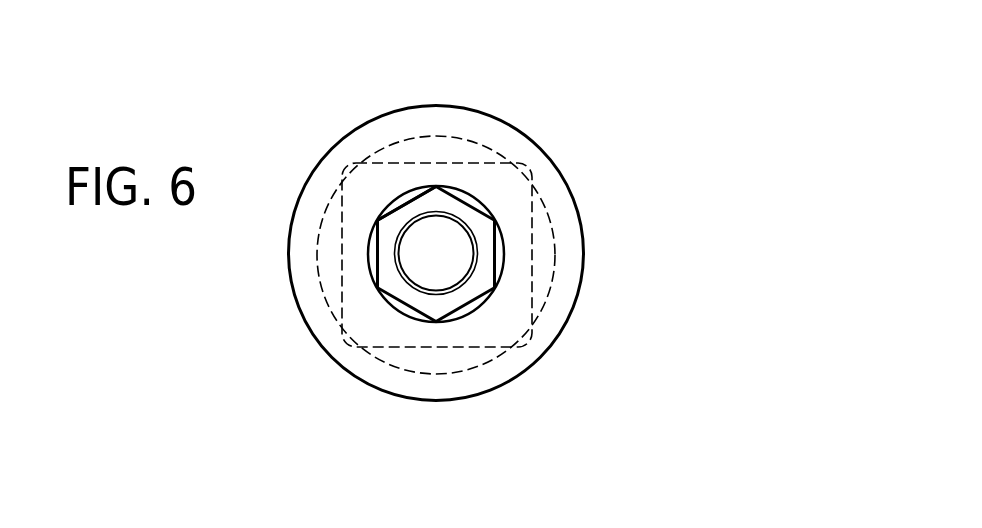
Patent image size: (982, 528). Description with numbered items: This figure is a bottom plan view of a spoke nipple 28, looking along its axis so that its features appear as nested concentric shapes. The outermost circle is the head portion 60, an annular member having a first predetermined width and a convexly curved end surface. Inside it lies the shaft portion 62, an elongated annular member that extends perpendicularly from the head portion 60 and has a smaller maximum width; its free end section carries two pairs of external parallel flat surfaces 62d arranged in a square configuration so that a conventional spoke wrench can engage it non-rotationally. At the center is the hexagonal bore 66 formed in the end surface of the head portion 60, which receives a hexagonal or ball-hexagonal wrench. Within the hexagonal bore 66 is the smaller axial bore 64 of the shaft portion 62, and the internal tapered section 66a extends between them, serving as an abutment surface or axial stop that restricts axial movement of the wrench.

The spoke nipple 28 is at (465, 226).
The head portion 60 is at (592, 232).
The shaft portion 62 is at (547, 205).
The external parallel flat surfaces 62d is at (447, 163).
The axial bore 64 is at (447, 224).
The hexagonal bore 66 is at (499, 257).
The internal tapered section 66a is at (391, 220).